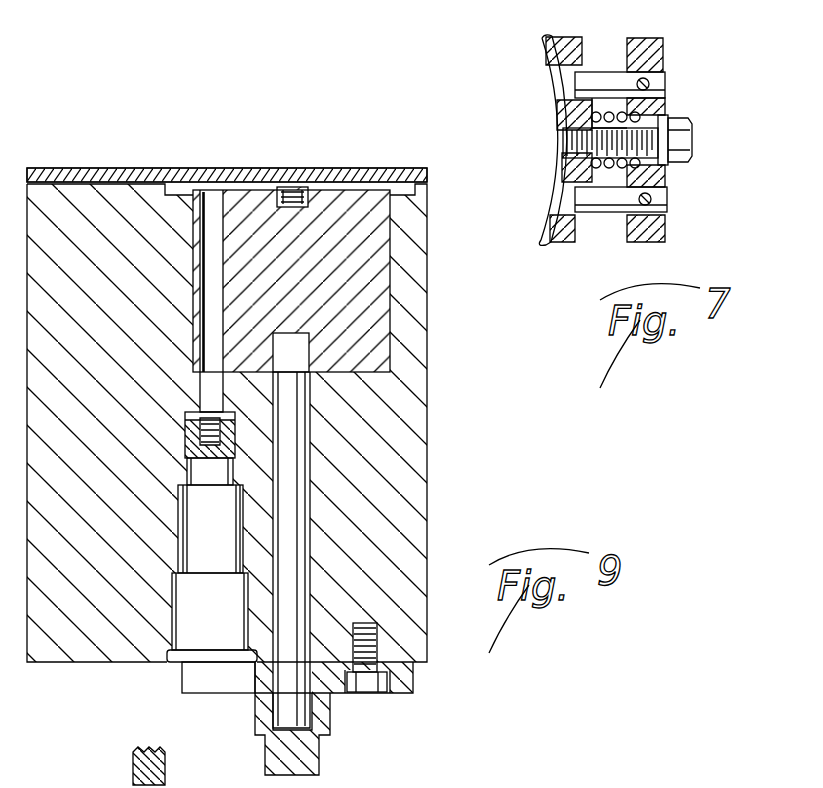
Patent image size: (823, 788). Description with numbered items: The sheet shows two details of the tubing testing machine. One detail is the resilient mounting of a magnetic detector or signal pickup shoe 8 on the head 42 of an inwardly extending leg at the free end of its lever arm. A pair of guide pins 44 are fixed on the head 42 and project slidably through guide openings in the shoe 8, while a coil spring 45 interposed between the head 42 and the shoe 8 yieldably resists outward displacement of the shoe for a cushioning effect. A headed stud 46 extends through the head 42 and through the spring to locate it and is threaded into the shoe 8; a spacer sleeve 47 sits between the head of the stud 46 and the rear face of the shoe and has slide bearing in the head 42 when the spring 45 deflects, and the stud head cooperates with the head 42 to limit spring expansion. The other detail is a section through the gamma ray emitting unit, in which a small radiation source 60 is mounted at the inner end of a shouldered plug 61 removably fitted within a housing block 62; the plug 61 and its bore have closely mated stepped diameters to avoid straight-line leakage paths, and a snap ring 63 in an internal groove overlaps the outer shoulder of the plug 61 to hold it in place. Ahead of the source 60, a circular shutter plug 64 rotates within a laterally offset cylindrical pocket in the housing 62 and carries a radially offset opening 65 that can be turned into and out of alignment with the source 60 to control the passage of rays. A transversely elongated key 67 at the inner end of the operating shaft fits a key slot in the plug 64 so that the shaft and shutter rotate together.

In FIG. 7, the shoe 8 is at (562, 240).
In FIG. 7, the head 42 is at (662, 232).
In FIG. 7, the guide pins 44 is at (606, 72).
In FIG. 7, the coil spring 45 is at (590, 160).
In FIG. 7, the headed stud 46 is at (680, 152).
In FIG. 7, the spacer sleeve 47 is at (660, 110).
In FIG. 9, the radiation source 60 is at (200, 392).
In FIG. 9, the shouldered plug 61 is at (211, 537).
In FIG. 9, the housing block 62 is at (400, 443).
In FIG. 9, the snap ring 63 is at (176, 665).
In FIG. 9, the shutter plug 64 is at (357, 255).
In FIG. 9, the opening 65 is at (213, 200).
In FIG. 9, the key 67 is at (300, 362).